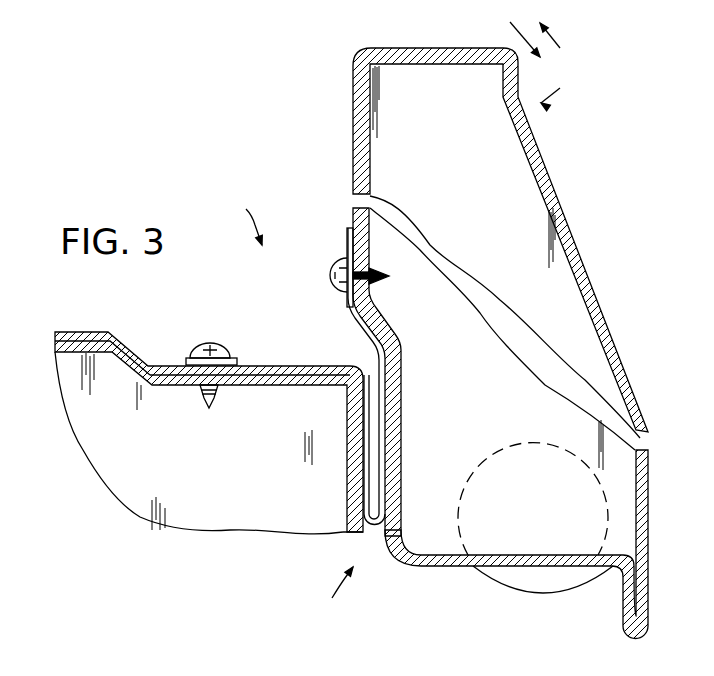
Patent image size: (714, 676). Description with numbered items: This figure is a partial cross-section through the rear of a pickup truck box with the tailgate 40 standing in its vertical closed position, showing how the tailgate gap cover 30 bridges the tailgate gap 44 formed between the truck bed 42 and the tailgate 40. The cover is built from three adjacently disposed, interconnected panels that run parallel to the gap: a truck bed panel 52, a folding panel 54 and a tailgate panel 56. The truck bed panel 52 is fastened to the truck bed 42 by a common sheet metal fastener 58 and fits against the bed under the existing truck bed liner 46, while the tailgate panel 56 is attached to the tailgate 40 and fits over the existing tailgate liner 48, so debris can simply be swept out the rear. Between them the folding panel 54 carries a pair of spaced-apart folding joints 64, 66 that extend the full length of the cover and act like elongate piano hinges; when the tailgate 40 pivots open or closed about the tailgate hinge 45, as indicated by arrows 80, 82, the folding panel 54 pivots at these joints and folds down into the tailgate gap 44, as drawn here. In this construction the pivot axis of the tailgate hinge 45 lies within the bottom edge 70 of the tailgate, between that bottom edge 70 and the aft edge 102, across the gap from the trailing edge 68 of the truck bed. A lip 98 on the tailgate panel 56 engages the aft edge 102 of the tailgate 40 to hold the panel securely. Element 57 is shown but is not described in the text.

The tailgate gap cover 30 is at (243, 218).
The tailgate 40 is at (613, 212).
The truck bed 42 is at (83, 450).
The tailgate gap 44 is at (330, 590).
The tailgate hinge 45 is at (538, 593).
The truck bed liner 46 is at (112, 333).
The tailgate liner 48 is at (500, 224).
The truck bed panel 52 is at (258, 366).
The folding panel 54 is at (366, 374).
The tailgate panel 56 is at (348, 230).
The fastener 57 is at (332, 263).
The sheet metal fastener 58 is at (197, 343).
The folding joint 64 is at (360, 370).
The folding joint 66 is at (380, 526).
The trailing edge of the truck bed 68 is at (363, 534).
The bottom edge of the tailgate 70 is at (447, 567).
The arrow 80 is at (510, 22).
The arrow 82 is at (560, 48).
The lip 98 is at (437, 48).
The aft edge of the tailgate 102 is at (560, 88).